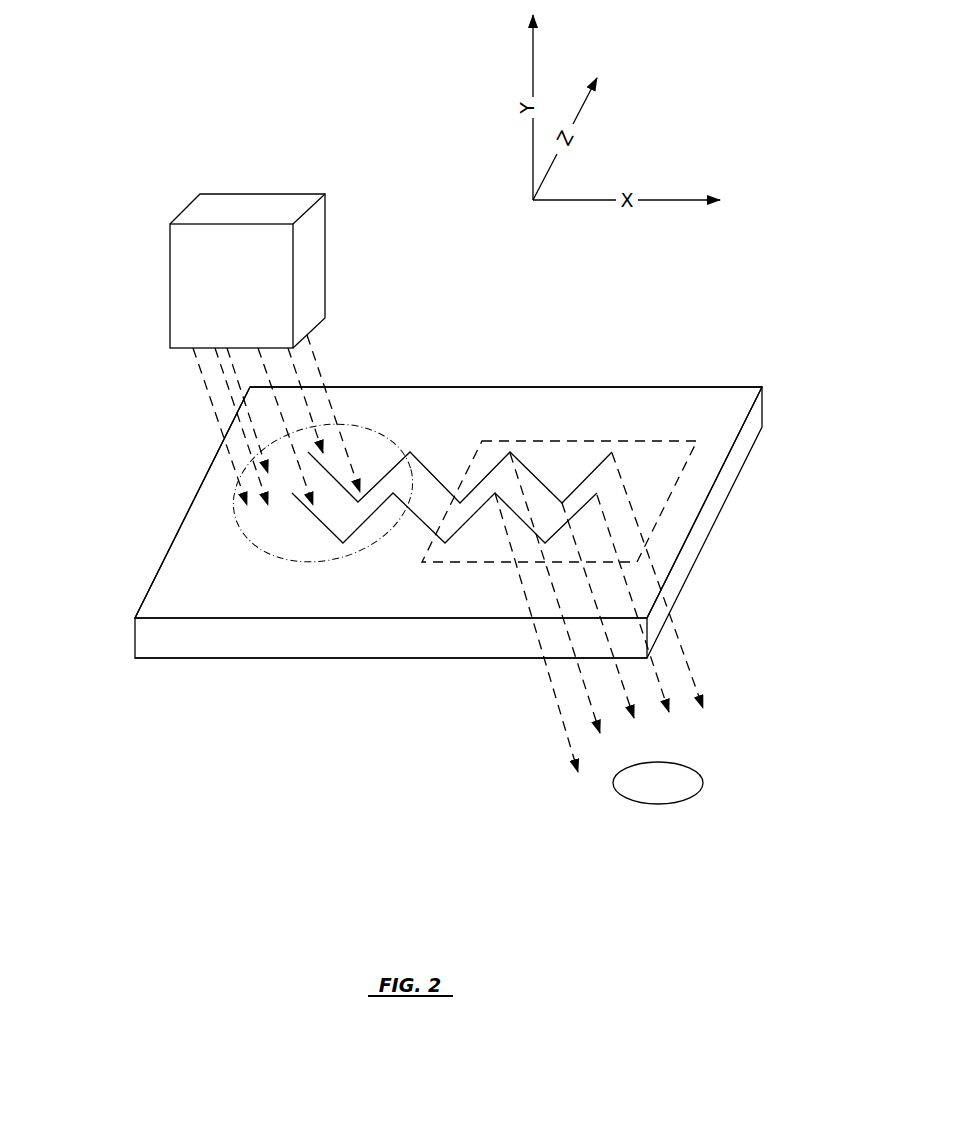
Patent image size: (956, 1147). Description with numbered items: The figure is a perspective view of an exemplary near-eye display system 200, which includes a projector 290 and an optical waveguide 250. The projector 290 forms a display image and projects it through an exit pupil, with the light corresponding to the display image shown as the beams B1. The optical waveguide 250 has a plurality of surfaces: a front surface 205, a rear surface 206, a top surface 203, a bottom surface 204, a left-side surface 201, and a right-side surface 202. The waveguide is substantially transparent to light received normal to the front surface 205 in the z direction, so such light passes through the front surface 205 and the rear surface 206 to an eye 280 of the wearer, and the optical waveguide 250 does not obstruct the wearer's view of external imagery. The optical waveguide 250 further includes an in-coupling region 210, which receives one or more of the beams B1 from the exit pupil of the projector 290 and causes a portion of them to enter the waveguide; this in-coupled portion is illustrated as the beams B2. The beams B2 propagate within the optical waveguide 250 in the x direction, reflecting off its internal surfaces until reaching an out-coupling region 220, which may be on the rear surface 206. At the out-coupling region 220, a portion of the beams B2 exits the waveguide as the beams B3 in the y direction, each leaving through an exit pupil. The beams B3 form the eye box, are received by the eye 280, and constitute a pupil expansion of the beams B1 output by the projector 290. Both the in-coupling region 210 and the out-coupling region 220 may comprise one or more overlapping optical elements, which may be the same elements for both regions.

The near-eye display system 200 is at (393, 915).
The left-side surface 201 is at (162, 550).
The right-side surface 202 is at (750, 435).
The top surface 203 is at (496, 387).
The bottom surface 204 is at (450, 638).
The front surface 205 is at (300, 605).
The rear surface 206 is at (403, 658).
The in-coupling region 210 is at (398, 447).
The out-coupling region 220 is at (585, 442).
The optical waveguide 250 is at (431, 577).
The eye 280 is at (658, 783).
The projector 290 is at (247, 271).
The beams B1 is at (205, 432).
The beams B2 is at (405, 542).
The beams B3 is at (696, 662).